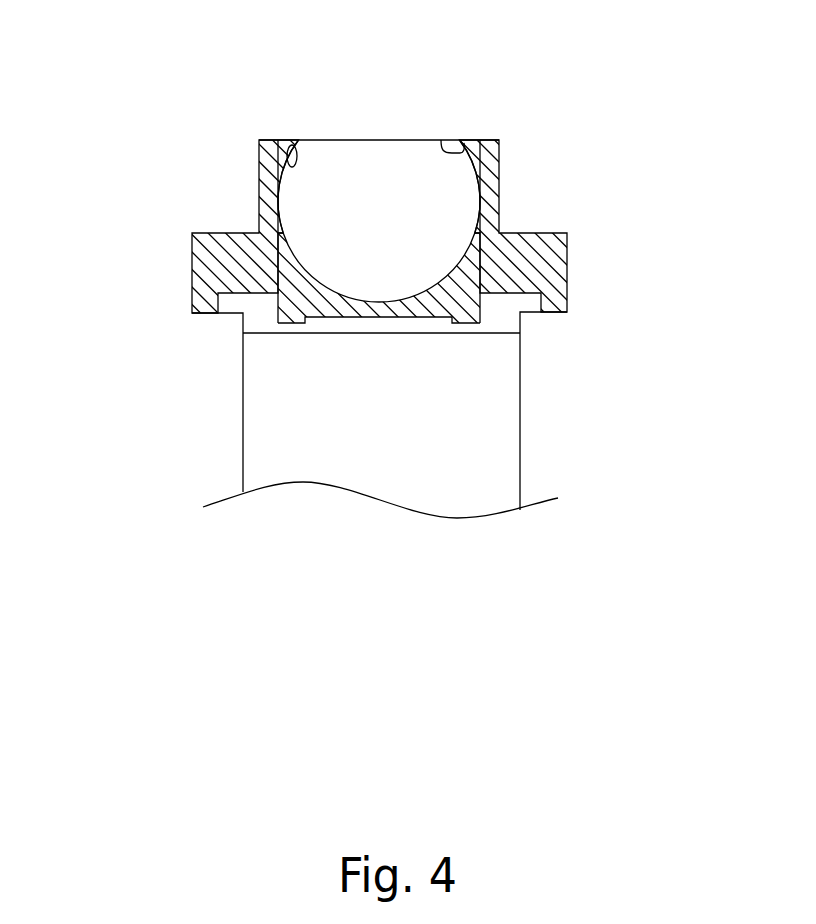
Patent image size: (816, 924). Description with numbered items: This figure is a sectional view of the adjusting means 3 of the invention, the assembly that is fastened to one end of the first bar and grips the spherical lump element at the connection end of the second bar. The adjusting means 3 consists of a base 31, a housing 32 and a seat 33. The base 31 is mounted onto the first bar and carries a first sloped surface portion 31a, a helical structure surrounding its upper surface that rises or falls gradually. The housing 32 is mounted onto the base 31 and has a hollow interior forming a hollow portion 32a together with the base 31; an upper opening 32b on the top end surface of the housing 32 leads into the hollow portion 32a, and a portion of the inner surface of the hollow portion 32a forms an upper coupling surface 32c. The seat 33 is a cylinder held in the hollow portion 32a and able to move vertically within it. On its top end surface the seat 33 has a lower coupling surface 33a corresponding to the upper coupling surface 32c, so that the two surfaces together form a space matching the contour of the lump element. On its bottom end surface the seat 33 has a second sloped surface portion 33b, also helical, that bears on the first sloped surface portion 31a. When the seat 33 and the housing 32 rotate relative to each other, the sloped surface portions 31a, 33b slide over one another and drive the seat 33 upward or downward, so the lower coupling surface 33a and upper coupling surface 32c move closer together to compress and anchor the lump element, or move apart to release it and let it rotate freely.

The adjusting means 3 is at (606, 188).
The base 31 is at (520, 325).
The first sloped surface portion 31a is at (452, 325).
The housing 32 is at (555, 263).
The hollow portion 32a is at (318, 158).
The upper opening 32b is at (380, 138).
The upper coupling surface 32c is at (290, 145).
The seat 33 is at (535, 217).
The lower coupling surface 33a is at (332, 278).
The second sloped surface portion 33b is at (295, 318).